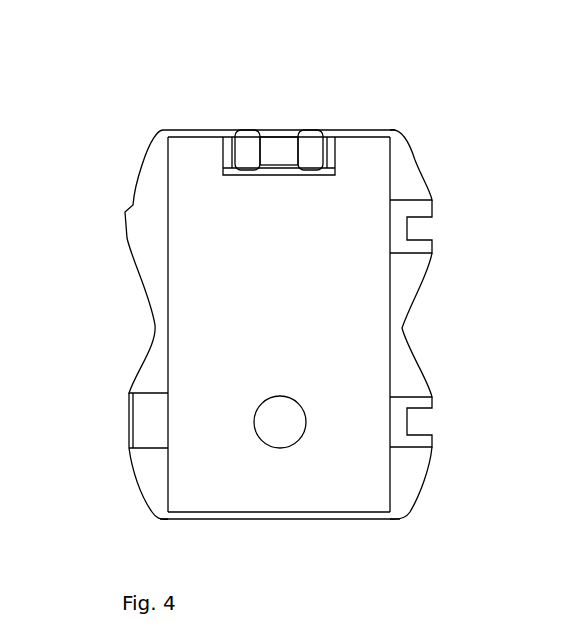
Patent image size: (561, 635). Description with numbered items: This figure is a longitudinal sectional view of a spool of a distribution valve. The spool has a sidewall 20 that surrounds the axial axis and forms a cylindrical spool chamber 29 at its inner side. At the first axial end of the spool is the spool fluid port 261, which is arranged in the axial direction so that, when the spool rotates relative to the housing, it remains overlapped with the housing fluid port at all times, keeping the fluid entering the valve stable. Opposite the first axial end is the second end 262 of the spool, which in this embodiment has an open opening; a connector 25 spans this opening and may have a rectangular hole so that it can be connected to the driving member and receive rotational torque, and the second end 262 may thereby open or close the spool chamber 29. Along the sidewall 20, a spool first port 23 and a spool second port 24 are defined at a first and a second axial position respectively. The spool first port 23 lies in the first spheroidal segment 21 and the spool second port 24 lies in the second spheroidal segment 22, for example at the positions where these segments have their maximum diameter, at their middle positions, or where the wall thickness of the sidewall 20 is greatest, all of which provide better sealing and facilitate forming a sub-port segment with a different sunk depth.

The sidewall 20 is at (155, 358).
The first spheroidal segment 21 is at (150, 458).
The second spheroidal segment 22 is at (147, 185).
The spool first port 23 is at (143, 425).
The spool second port 24 is at (412, 225).
The connector 25 is at (280, 157).
The spool chamber 29 is at (287, 330).
The spool fluid port 261 is at (235, 513).
The second end 262 is at (198, 127).